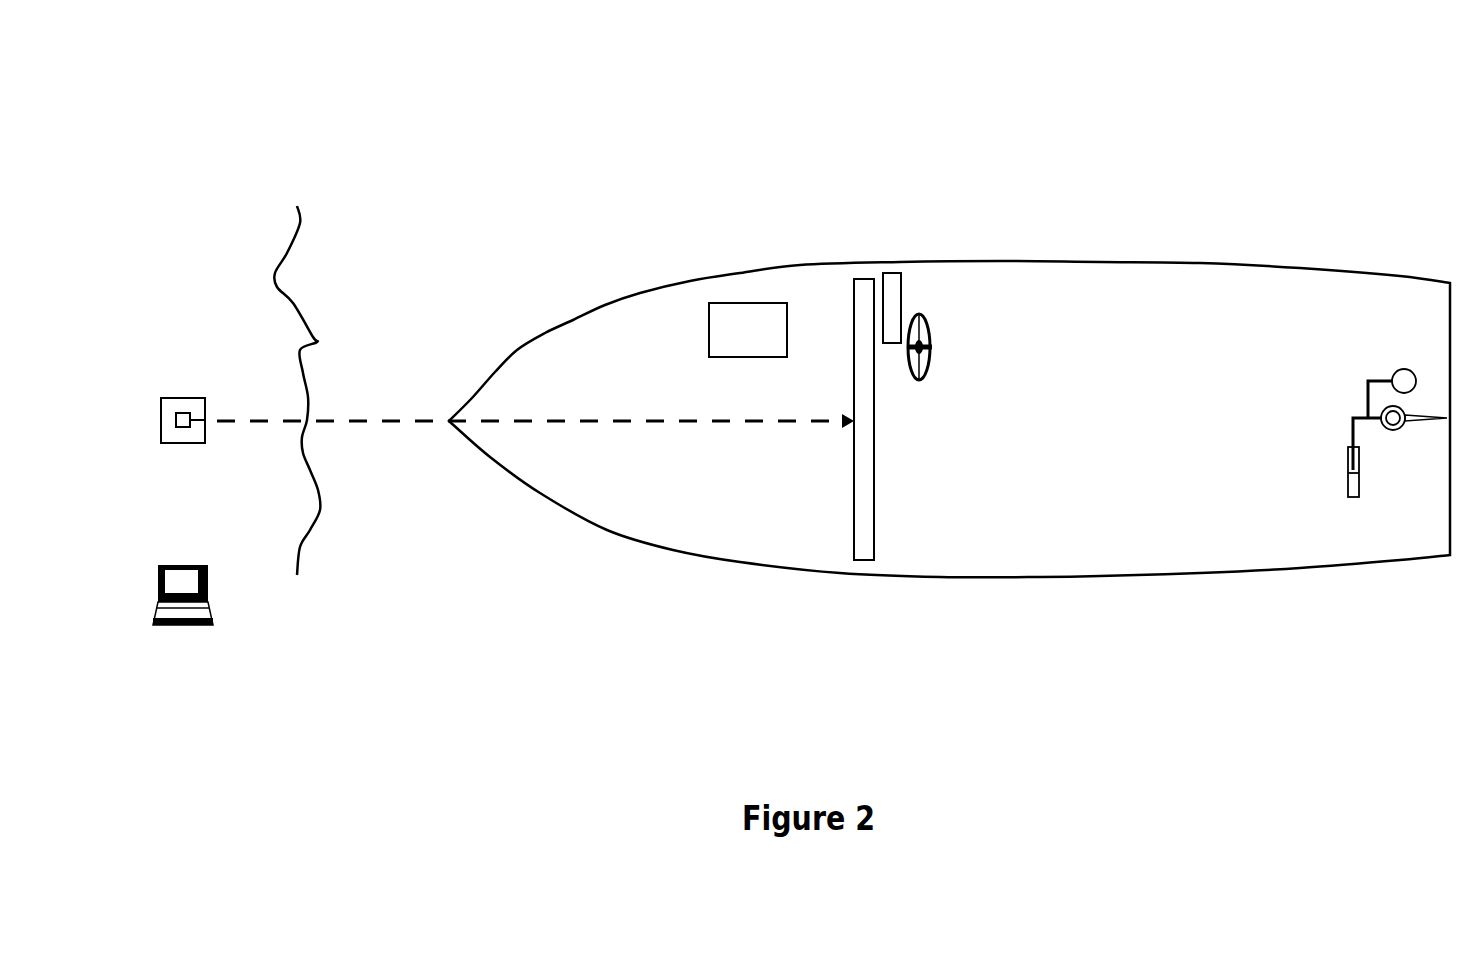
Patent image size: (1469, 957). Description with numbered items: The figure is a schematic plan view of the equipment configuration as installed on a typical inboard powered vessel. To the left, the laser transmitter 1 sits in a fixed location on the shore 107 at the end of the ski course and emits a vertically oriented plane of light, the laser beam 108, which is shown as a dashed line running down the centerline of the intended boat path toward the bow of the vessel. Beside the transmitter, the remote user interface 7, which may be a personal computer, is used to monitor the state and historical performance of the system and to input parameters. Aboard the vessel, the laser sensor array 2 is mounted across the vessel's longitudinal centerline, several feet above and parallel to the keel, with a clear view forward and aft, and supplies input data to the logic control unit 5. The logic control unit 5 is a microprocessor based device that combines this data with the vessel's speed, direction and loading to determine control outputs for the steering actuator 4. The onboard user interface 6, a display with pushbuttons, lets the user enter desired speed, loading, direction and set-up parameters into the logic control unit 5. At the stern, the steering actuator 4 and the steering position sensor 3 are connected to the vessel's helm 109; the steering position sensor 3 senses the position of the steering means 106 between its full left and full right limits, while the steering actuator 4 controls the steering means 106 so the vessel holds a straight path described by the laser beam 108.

The laser transmitter 1 is at (183, 445).
The laser sensor array 2 is at (863, 279).
The steering position sensor 3 is at (1401, 369).
The steering actuator 4 is at (1347, 448).
The logic control unit 5 is at (748, 303).
The onboard user interface 6 is at (892, 273).
The remote user interface 7 is at (183, 613).
The steering means 106 is at (1417, 423).
The shore 107 is at (297, 418).
The laser beam 108 is at (330, 420).
The helm 109 is at (922, 312).